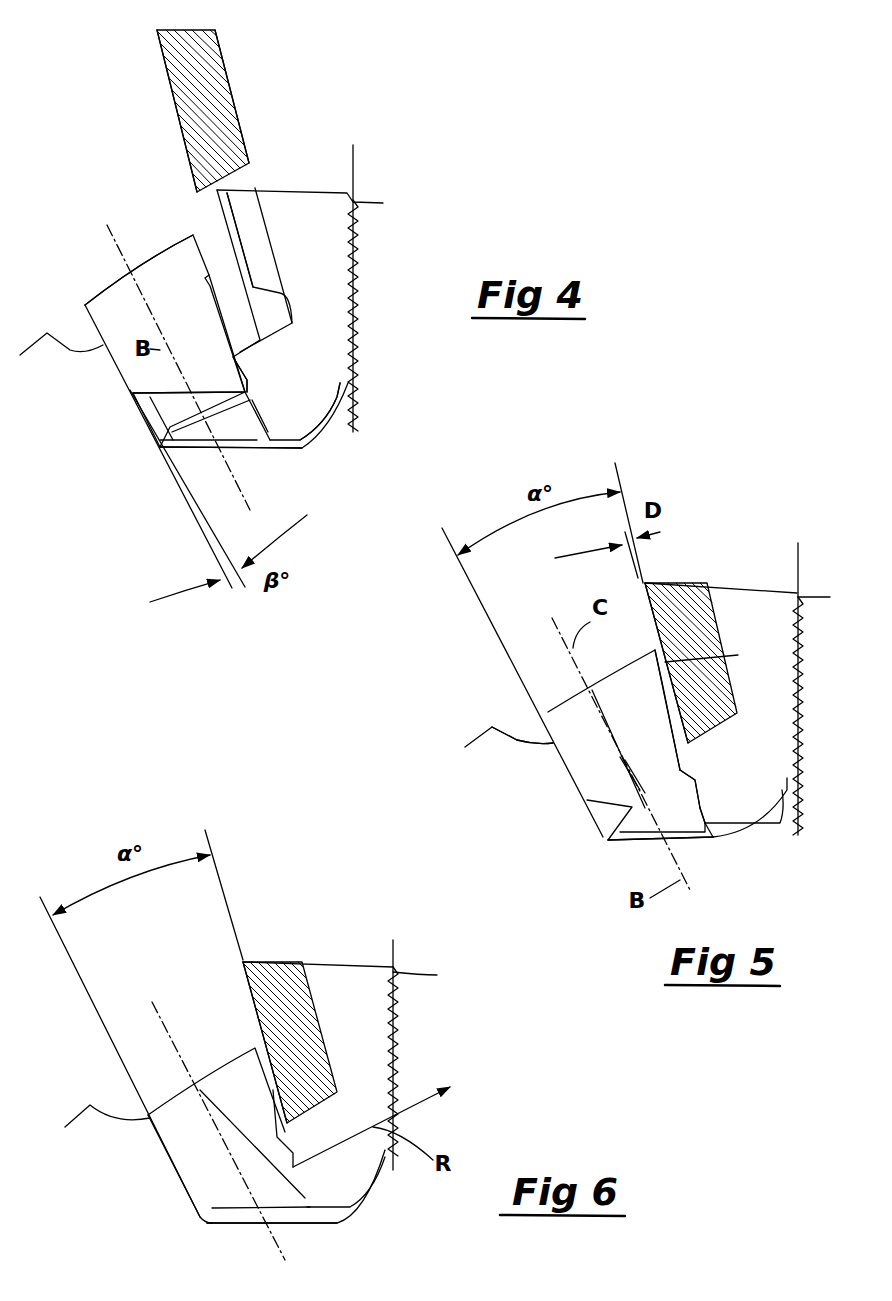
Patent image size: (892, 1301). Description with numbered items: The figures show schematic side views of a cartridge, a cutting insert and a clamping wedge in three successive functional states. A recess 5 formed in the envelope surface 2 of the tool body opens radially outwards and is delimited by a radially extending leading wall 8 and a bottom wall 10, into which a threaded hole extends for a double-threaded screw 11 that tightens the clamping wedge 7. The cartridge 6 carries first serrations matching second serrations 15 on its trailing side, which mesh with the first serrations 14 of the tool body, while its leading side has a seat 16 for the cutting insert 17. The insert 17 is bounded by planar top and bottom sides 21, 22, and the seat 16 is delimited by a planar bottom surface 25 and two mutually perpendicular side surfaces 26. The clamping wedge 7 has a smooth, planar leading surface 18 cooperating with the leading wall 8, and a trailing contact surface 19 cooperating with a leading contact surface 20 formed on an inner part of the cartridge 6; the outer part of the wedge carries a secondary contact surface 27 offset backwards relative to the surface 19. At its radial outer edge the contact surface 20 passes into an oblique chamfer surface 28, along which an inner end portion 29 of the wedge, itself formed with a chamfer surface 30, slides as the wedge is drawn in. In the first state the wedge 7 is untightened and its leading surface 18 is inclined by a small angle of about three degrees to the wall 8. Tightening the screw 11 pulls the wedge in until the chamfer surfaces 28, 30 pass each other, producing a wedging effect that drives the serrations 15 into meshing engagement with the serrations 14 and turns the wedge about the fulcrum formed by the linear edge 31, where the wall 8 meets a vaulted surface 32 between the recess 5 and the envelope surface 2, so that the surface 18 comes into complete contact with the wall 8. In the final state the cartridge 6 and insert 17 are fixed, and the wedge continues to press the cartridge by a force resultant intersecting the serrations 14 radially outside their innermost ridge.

In FIG. 5, the envelope surface 2 is at (818, 598).
In FIG. 4, the recess 5 is at (283, 450).
In FIG. 5, the recess 5 is at (600, 815).
In FIG. 6, the recess 5 is at (323, 1218).
In FIG. 4, the cartridge 6 is at (327, 422).
In FIG. 5, the cartridge 6 is at (753, 592).
In FIG. 4, the clamping wedge 7 is at (102, 288).
In FIG. 5, the clamping wedge 7 is at (553, 690).
In FIG. 6, the clamping wedge 7 is at (175, 1117).
In FIG. 4, the leading wall 8 is at (147, 427).
In FIG. 6, the leading wall 8 is at (172, 1163).
In FIG. 4, the bottom wall 10 is at (190, 440).
In FIG. 4, the screw 11 is at (202, 452).
In FIG. 5, the screw 11 is at (620, 830).
In FIG. 6, the screw 11 is at (238, 1217).
In FIG. 4, the first serrations 14 is at (362, 230).
In FIG. 4, the second serrations 15 is at (353, 227).
In FIG. 4, the seat 16 is at (263, 303).
In FIG. 4, the cutting insert 17 is at (153, 42).
In FIG. 5, the cutting insert 17 is at (677, 590).
In FIG. 6, the cutting insert 17 is at (273, 967).
In FIG. 4, the leading surface 18 is at (100, 338).
In FIG. 4, the trailing contact surface 19 is at (228, 356).
In FIG. 5, the trailing contact surface 19 is at (677, 755).
In FIG. 4, the leading contact surface 20 is at (265, 428).
In FIG. 5, the leading contact surface 20 is at (705, 823).
In FIG. 4, the top side 21 is at (168, 88).
In FIG. 5, the top side 21 is at (660, 634).
In FIG. 6, the top side 21 is at (252, 1005).
In FIG. 4, the bottom side 22 is at (232, 73).
In FIG. 4, the bottom surface 25 is at (262, 228).
In FIG. 4, the side surfaces 26 is at (272, 325).
In FIG. 5, the secondary contact surface 27 is at (738, 655).
In FIG. 5, the chamfer surface 28 is at (695, 780).
In FIG. 5, the inner end portion 29 is at (680, 797).
In FIG. 5, the chamfer surface 30 is at (700, 808).
In FIG. 5, the linear edge 31 is at (553, 747).
In FIG. 5, the vaulted surface 32 is at (517, 742).